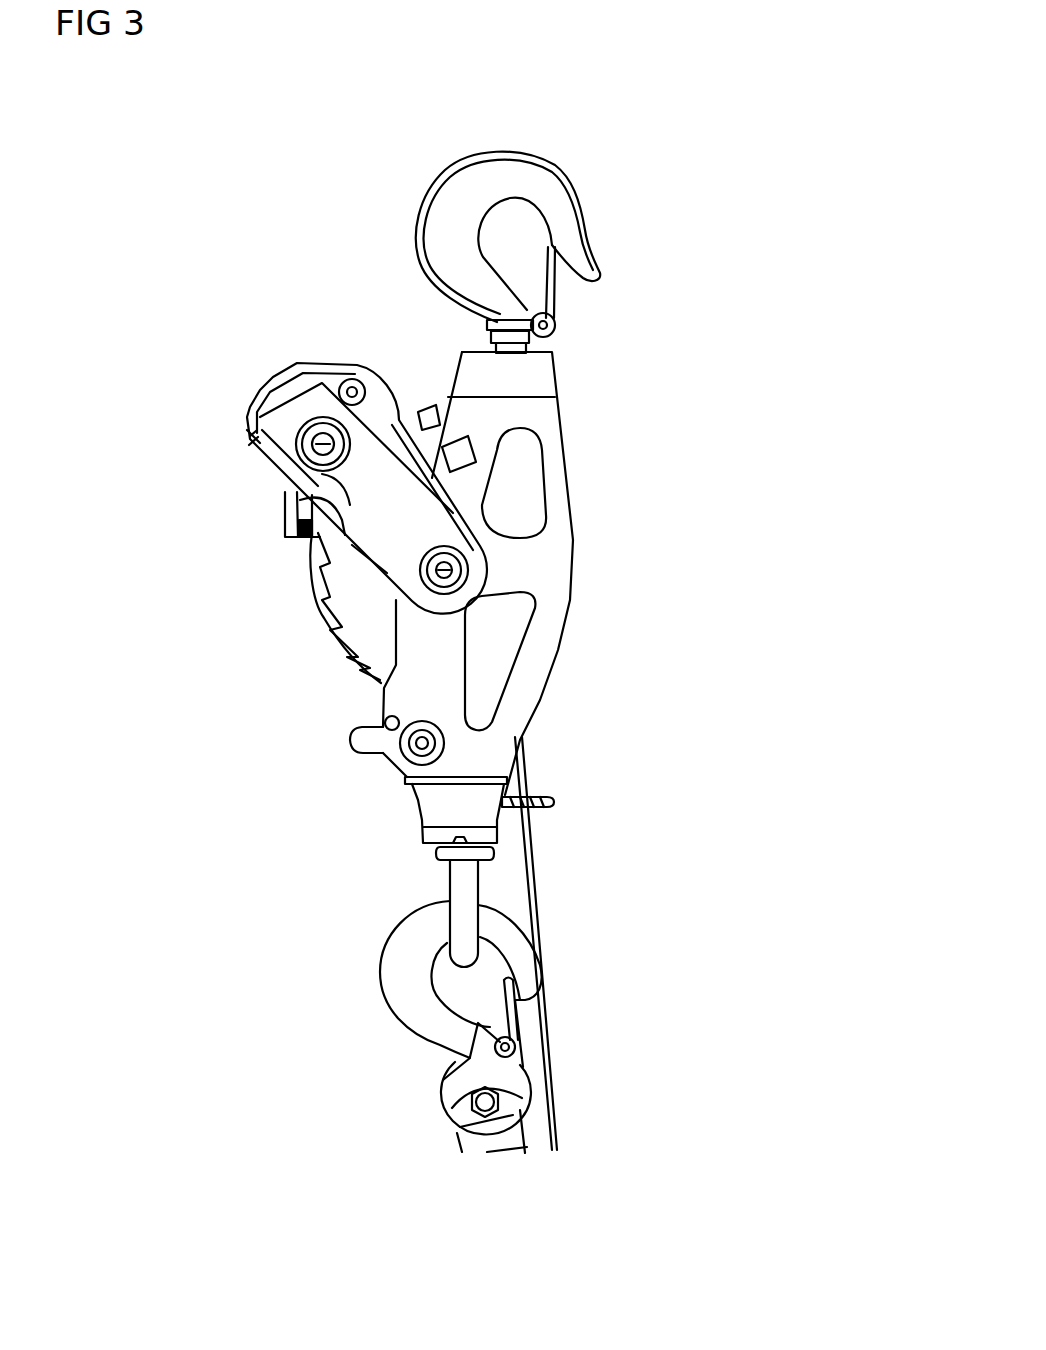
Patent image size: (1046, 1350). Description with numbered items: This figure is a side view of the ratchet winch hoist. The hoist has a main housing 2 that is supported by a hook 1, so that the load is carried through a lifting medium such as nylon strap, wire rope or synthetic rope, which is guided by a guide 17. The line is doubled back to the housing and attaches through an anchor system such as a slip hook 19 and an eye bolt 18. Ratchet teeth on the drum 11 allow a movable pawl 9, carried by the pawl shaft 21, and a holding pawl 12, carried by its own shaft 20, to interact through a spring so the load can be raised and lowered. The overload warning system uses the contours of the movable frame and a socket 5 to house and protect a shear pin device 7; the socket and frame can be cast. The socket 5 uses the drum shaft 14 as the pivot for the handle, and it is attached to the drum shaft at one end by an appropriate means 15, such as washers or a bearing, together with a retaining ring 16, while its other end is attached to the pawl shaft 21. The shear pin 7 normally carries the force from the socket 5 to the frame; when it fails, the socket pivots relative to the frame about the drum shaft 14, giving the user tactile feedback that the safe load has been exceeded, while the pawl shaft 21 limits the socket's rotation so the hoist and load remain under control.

The hook 1 is at (552, 185).
The main housing 2 is at (517, 468).
The socket 5 is at (375, 487).
The shear pin device 7 is at (348, 385).
The movable pawl 9 is at (287, 510).
The drum 11 is at (372, 623).
The holding pawl 12 is at (368, 743).
The drum shaft 14 is at (446, 567).
The attachment means 15 is at (451, 568).
The retaining ring 16 is at (454, 585).
The guide 17 is at (547, 807).
The eye bolt 18 is at (465, 912).
The slip hook 19 is at (427, 1010).
The shaft 20 is at (420, 745).
The pawl shaft 21 is at (318, 442).